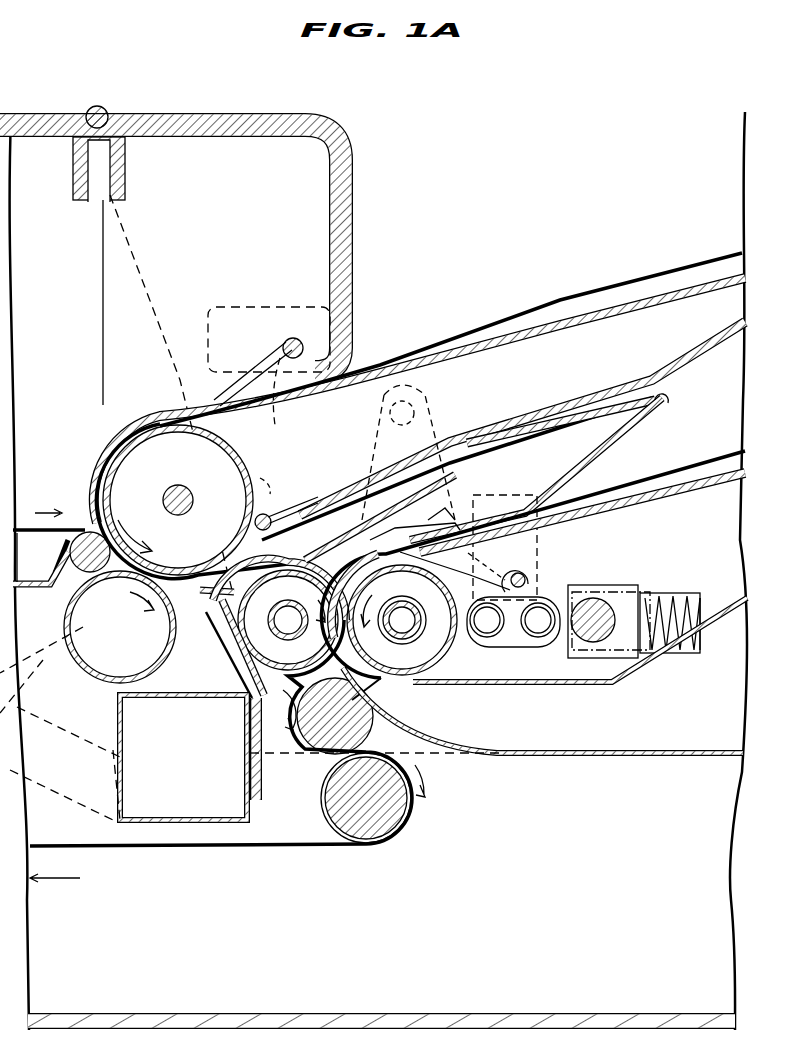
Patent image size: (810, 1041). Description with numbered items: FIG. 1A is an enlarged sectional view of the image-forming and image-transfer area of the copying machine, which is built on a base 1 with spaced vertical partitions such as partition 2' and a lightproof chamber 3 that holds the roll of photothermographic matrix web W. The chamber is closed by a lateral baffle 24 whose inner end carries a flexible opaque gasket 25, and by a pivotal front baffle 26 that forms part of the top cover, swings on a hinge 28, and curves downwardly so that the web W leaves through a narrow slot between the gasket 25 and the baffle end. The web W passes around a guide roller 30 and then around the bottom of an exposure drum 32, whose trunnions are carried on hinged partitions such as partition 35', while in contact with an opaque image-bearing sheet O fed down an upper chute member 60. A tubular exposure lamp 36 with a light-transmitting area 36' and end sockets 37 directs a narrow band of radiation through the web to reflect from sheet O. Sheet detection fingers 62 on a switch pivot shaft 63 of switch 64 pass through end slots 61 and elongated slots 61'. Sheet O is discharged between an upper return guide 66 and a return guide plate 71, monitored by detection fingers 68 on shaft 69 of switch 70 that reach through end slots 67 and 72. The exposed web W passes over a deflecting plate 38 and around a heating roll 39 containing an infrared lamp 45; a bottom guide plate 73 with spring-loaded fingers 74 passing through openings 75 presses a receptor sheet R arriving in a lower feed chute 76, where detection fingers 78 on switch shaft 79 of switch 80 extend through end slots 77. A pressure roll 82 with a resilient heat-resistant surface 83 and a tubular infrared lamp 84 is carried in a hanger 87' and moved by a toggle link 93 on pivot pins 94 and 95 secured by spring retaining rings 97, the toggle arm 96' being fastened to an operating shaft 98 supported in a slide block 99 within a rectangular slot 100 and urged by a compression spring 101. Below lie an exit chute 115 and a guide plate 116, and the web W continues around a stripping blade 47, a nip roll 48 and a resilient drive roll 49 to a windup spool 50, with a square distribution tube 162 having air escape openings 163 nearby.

The base 1 is at (367, 1013).
The vertical partition 2' is at (219, 638).
The lightproof chamber 3 is at (57, 280).
The lateral baffle 24 is at (38, 592).
The flexible opaque gasket 25 is at (58, 562).
The front baffle 26 is at (332, 227).
The hinge 28 is at (111, 105).
The guide roller 30 is at (96, 524).
The exposure drum 32 is at (187, 481).
The hinged vertical partition 35' is at (231, 215).
The tubular exposure lamp 36 is at (120, 627).
The light-transmitting area 36' is at (136, 604).
The end sockets 37 is at (43, 785).
The deflecting plate 38 is at (208, 603).
The heating roll 39 is at (304, 597).
The infrared lamp 45 is at (292, 635).
The stripping blade 47 is at (251, 667).
The nip roll 48 is at (370, 722).
The resilient drive roll 49 is at (322, 806).
The windup spool 50 is at (71, 861).
The upper chute member 60 is at (615, 318).
The end slots 61 is at (298, 413).
The elongated slots 61' is at (197, 383).
The sheet detection fingers 62 is at (217, 373).
The switch pivot shaft 63 is at (296, 342).
The switch 64 is at (212, 331).
The upper return guide 66 is at (528, 407).
The end slots 67 is at (328, 499).
The detection fingers 68 is at (293, 503).
The shaft 69 is at (271, 508).
The switch 70 is at (270, 474).
The return guide plate 71 is at (526, 442).
The end slots 72 is at (336, 536).
The bottom guide plate 73 is at (567, 483).
The spring-loaded fingers 74 is at (447, 507).
The openings 75 is at (415, 526).
The lower feed chute 76 is at (670, 500).
The end slots 77 is at (455, 571).
The detection fingers 78 is at (497, 563).
The switch shaft 79 is at (527, 576).
The switch 80 is at (550, 545).
The pressure roll 82 is at (419, 599).
The resilient heat-resistant surface 83 is at (402, 678).
The tubular infrared lamp 84 is at (406, 635).
The hanger 87' is at (415, 444).
The toggle link 93 is at (526, 648).
The pivot pin 94 is at (480, 638).
The pivot pin 95 is at (540, 635).
The toggle arm 96' is at (610, 602).
The spring retaining rings 97 is at (492, 635).
The operating shaft 98 is at (606, 598).
The slide block 99 is at (645, 594).
The rectangular slot 100 is at (678, 598).
The compression spring 101 is at (692, 602).
The exit chute 115 is at (465, 744).
The guide plate 116 is at (584, 684).
The square distribution tube 162 is at (207, 780).
The air escape openings 163 is at (230, 704).
The opaque image-bearing sheet O is at (536, 305).
The receptor sheet R is at (681, 478).
The photothermographic matrix web W is at (213, 866).